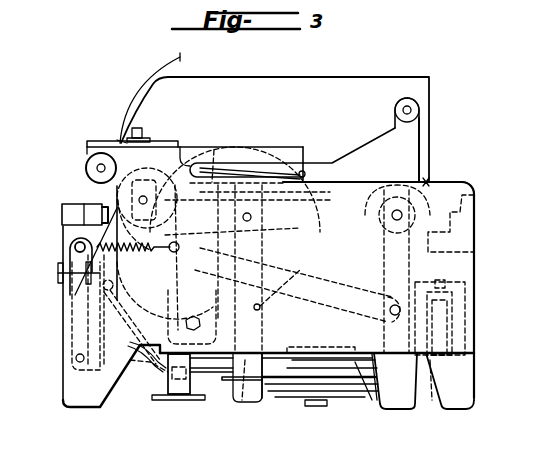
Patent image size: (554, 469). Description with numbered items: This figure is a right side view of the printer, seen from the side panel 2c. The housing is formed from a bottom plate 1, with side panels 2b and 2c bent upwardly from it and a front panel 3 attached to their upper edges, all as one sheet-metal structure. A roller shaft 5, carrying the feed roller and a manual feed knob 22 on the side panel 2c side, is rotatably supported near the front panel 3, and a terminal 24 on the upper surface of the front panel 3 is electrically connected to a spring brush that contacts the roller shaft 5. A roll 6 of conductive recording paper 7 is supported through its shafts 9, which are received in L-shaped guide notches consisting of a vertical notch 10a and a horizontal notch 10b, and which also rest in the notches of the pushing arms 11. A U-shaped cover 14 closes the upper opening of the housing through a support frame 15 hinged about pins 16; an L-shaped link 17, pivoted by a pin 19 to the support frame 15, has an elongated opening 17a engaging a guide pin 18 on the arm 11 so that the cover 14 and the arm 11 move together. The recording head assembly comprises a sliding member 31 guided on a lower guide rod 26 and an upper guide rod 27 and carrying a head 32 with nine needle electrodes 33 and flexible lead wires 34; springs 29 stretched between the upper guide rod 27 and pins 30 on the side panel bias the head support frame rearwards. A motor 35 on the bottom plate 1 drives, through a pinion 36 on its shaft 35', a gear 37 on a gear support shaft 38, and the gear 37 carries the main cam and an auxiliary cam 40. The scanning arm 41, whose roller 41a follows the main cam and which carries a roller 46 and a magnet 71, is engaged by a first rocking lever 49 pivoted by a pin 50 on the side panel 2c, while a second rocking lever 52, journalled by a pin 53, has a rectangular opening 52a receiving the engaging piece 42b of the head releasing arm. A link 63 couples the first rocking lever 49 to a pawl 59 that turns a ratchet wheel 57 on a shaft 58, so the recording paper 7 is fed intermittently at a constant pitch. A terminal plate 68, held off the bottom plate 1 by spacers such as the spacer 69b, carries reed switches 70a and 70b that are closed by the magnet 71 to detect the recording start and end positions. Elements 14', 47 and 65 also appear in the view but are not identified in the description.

The bottom plate 1 is at (474, 355).
The side panel 2b is at (474, 232).
The side panel 2c is at (474, 264).
The front panel 3 is at (120, 142).
The roller shaft 5 is at (88, 168).
The roll of recording paper 6 is at (240, 160).
The recording paper 7 is at (140, 81).
The shafts 9 is at (204, 155).
The vertical notch 10a is at (280, 210).
The horizontal notch 10b is at (332, 247).
The pushing arm 11 is at (260, 308).
The cover 14 is at (275, 114).
The cover edge 14' is at (107, 121).
The support frame 15 is at (474, 195).
The pins 16 is at (427, 183).
The link 17 is at (413, 129).
The elongated opening 17a is at (304, 158).
The guide pin 18 is at (224, 162).
The pin 19 is at (419, 107).
The manual feed knob 22 is at (90, 150).
The terminal 24 is at (142, 133).
The lower guide rod 26 is at (76, 358).
The upper guide rod 27 is at (62, 275).
The springs 29 is at (65, 296).
The pins 30 is at (180, 247).
The sliding member 31 is at (70, 247).
The head 32 is at (62, 225).
The needle electrodes 33 is at (139, 200).
The lead wires 34 is at (270, 404).
The motor 35 is at (465, 317).
The motor shaft 35' is at (430, 409).
The pinion 36 is at (476, 385).
The gear 37 is at (290, 400).
The gear support shaft 38 is at (318, 406).
The auxiliary cam 40 is at (356, 400).
The scanning arm 41 is at (233, 384).
The roller 41a is at (340, 402).
The engaging piece 42b is at (245, 402).
The roller 46 is at (408, 410).
The foot 47 is at (450, 410).
The first rocking lever 49 is at (380, 250).
The pin 50 is at (392, 215).
The second rocking lever 52 is at (268, 330).
The rectangular opening 52a is at (243, 404).
The pin 53 is at (270, 272).
The ratchet wheel 57 is at (215, 148).
The shaft 58 is at (66, 212).
The pawl 59 is at (70, 240).
The link 63 is at (348, 290).
The nut housing 65 is at (168, 305).
The terminal plate 68 is at (155, 401).
The spacer 69b is at (166, 380).
The reed switch 70a is at (172, 400).
The reed switch 70b is at (172, 400).
The magnet 71 is at (140, 352).